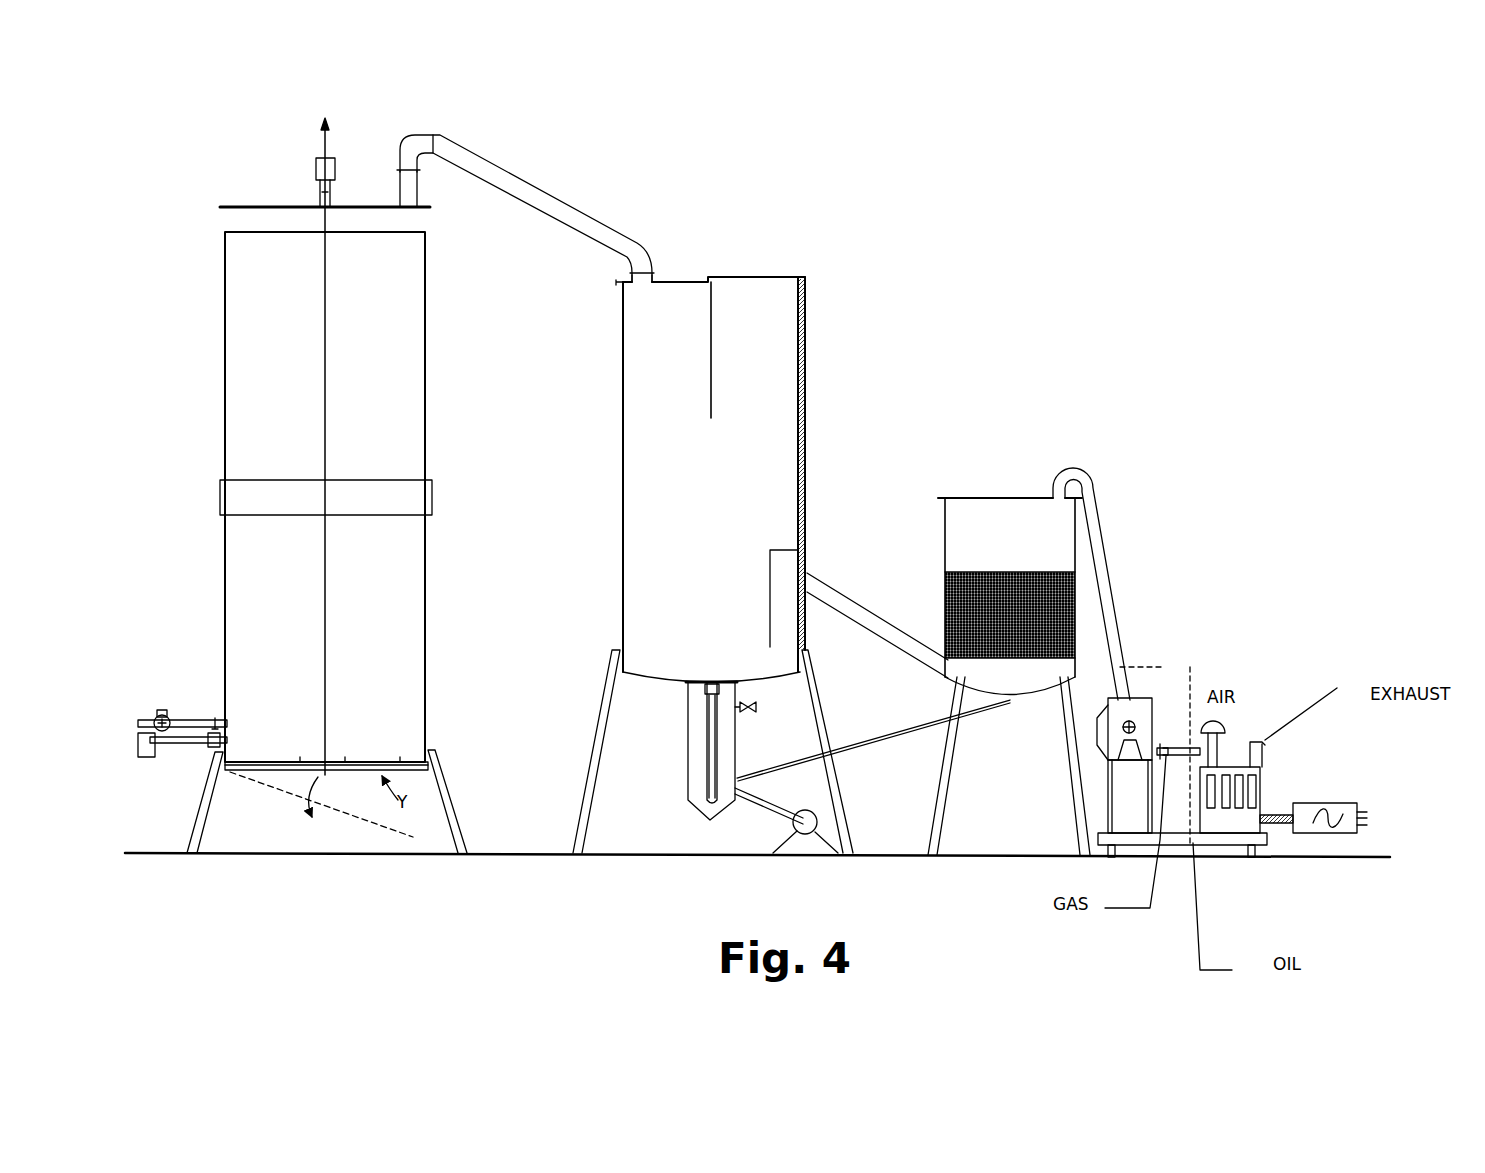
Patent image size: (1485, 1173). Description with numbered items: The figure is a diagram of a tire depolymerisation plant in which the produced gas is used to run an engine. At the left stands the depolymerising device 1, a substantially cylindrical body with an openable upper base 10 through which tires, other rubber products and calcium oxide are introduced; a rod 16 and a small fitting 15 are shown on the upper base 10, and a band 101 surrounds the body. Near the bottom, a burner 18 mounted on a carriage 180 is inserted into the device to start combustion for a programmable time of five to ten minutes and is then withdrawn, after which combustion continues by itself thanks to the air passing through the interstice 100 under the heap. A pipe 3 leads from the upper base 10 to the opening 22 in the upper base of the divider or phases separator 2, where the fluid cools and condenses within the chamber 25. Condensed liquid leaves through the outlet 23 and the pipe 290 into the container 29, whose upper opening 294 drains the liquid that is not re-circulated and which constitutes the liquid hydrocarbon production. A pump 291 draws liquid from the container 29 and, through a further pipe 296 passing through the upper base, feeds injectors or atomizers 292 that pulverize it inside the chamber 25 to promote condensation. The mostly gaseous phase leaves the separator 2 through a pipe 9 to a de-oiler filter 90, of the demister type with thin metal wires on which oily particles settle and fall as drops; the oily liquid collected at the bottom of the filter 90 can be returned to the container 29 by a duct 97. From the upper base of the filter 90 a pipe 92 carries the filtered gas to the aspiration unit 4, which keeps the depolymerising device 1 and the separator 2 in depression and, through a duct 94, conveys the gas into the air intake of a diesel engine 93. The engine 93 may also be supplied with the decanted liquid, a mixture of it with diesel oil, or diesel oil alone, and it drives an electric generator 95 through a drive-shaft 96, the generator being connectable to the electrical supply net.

The depolymerising device 1 is at (210, 353).
The upper base 10 is at (254, 205).
The sensor 15 is at (335, 165).
The agitator rod 16 is at (328, 130).
The reactor band 101 is at (220, 497).
The carriage 180 is at (183, 705).
The burner 18 is at (177, 763).
The interstice 100 is at (272, 765).
The pipe 3 is at (567, 200).
The divider or phases separator 2 is at (593, 427).
The opening 22 is at (640, 283).
The further pipe 296 is at (808, 373).
The injectors or atomizers 292 is at (712, 420).
The chamber 25 is at (678, 530).
The outlet 23 is at (706, 682).
The pipe 290 is at (707, 750).
The upper opening 294 is at (750, 711).
The container 29 is at (673, 813).
The pump 291 is at (800, 845).
The pipe 9 is at (848, 600).
The duct 97 is at (872, 737).
The de-oiler filter 90 is at (987, 477).
The pipe 92 is at (1103, 520).
The aspiration unit 4 is at (1147, 686).
The duct 94 is at (1167, 747).
The diesel engine 93 is at (1227, 818).
The drive-shaft 96 is at (1277, 810).
The electric generator 95 is at (1352, 807).